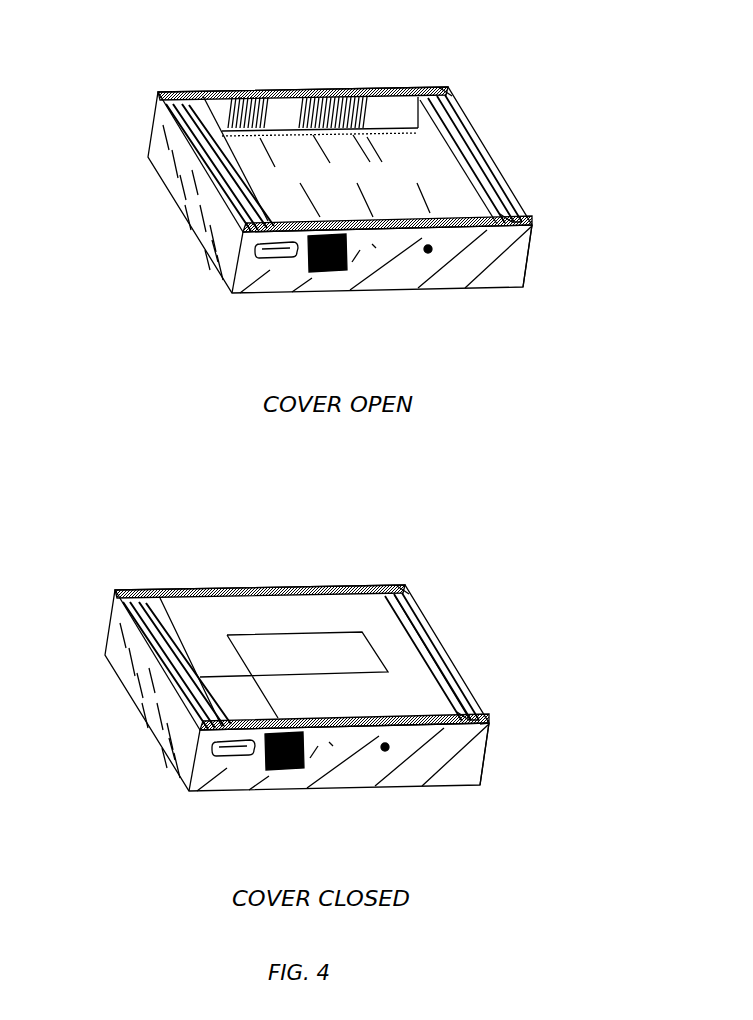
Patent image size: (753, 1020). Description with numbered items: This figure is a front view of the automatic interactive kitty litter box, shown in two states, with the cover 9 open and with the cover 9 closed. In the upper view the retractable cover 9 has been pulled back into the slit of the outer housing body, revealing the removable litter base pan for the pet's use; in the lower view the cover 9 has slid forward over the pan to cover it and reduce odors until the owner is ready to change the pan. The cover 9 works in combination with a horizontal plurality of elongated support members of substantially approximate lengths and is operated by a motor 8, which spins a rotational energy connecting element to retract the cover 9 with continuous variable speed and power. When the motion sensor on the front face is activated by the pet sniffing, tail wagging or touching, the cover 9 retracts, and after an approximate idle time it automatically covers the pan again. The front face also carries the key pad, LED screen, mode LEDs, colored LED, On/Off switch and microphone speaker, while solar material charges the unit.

The motor 8 is at (318, 633).
The cover 9 is at (295, 92).